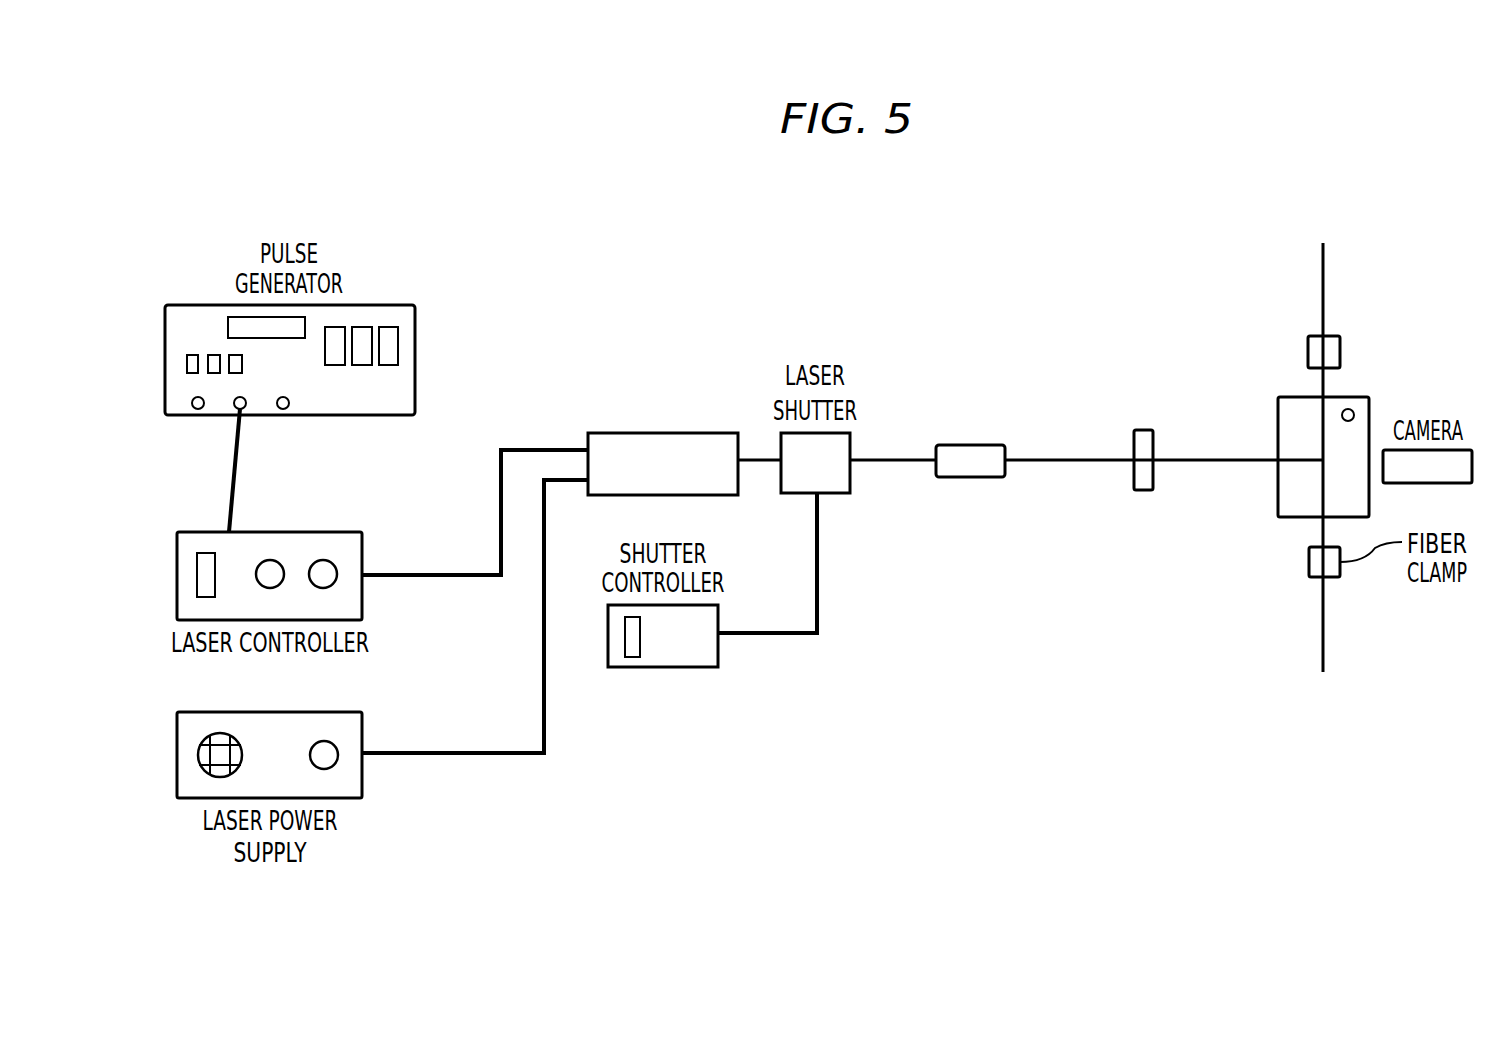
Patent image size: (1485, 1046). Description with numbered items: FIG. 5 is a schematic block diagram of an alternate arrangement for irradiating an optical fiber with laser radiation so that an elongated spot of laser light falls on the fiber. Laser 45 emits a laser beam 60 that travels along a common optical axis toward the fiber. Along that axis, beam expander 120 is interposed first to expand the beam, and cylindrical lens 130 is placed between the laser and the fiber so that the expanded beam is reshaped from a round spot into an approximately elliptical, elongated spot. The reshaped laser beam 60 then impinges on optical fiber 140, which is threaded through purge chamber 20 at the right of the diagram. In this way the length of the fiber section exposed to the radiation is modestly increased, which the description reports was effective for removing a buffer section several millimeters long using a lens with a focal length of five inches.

The laser 45 is at (727, 495).
The laser beam 60 is at (1086, 483).
The beam expander 120 is at (975, 477).
The cylindrical lens 130 is at (1142, 430).
The optical fiber 140 is at (1325, 642).
The purge chamber 20 is at (1357, 393).